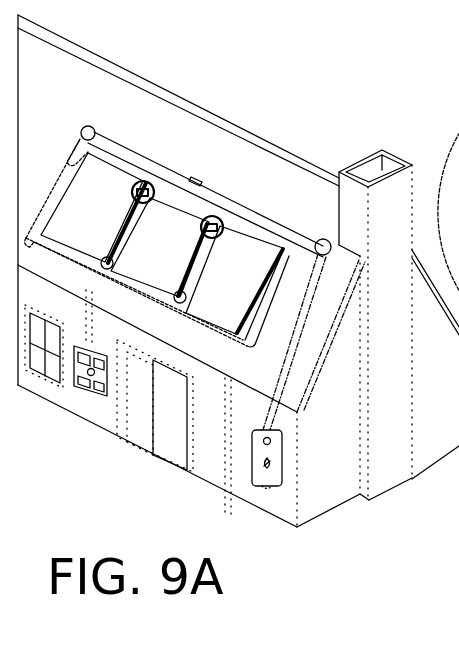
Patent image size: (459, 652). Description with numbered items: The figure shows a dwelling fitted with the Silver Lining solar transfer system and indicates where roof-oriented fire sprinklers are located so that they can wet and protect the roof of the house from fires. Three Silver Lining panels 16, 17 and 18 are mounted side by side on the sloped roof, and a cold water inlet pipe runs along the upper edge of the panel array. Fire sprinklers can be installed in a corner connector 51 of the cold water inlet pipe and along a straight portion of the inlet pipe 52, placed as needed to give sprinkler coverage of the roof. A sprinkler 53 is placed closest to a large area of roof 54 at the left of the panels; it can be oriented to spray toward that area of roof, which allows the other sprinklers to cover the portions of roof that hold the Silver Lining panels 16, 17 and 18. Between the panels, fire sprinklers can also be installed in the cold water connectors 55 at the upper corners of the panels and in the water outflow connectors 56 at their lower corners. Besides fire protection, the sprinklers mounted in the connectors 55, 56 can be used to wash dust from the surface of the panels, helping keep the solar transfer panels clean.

The Silver Lining panel 16 is at (93, 220).
The Silver Lining panel 17 is at (165, 255).
The Silver Lining panel 18 is at (242, 315).
The corner connector 51 is at (324, 240).
The straight portion of the inlet pipe 52 is at (200, 177).
The sprinkler 53 is at (91, 128).
The roof 54 is at (54, 80).
The cold water connector 55 is at (145, 182).
The water outflow connector 56 is at (104, 267).